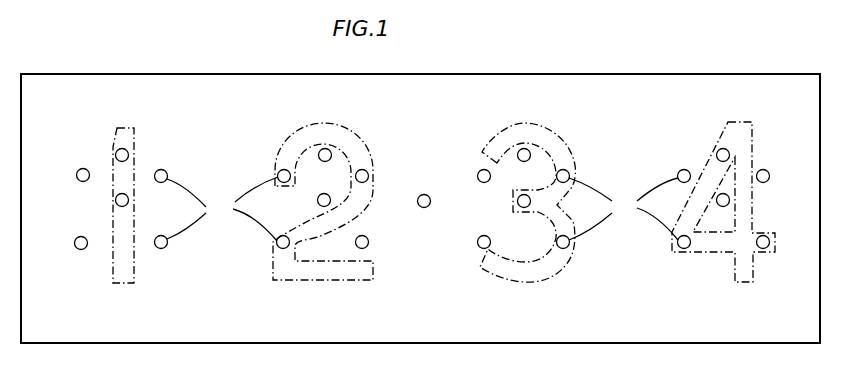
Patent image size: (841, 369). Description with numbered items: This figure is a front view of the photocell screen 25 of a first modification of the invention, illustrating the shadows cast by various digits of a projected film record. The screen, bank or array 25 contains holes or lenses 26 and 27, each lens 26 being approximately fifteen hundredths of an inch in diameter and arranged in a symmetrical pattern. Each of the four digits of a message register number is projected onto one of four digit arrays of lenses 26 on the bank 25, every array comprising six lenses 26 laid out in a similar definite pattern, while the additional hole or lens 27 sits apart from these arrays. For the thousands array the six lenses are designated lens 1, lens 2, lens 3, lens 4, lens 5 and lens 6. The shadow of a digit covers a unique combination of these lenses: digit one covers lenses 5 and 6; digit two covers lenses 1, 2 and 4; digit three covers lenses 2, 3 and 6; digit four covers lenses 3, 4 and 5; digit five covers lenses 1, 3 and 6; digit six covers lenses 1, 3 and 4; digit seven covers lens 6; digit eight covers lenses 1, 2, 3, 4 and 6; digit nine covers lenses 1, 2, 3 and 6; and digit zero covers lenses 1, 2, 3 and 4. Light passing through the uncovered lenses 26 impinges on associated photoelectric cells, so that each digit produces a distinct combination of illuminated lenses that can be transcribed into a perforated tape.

The lens 1 is at (384, 166).
The lens 2 is at (462, 166).
The lens 3 is at (463, 232).
The lens 4 is at (383, 232).
The lens 5 is at (426, 145).
The lens 6 is at (423, 192).
The photocell screen 25 is at (159, 75).
The lenses 26 is at (422, 209).
The hole or lens 27 is at (428, 191).